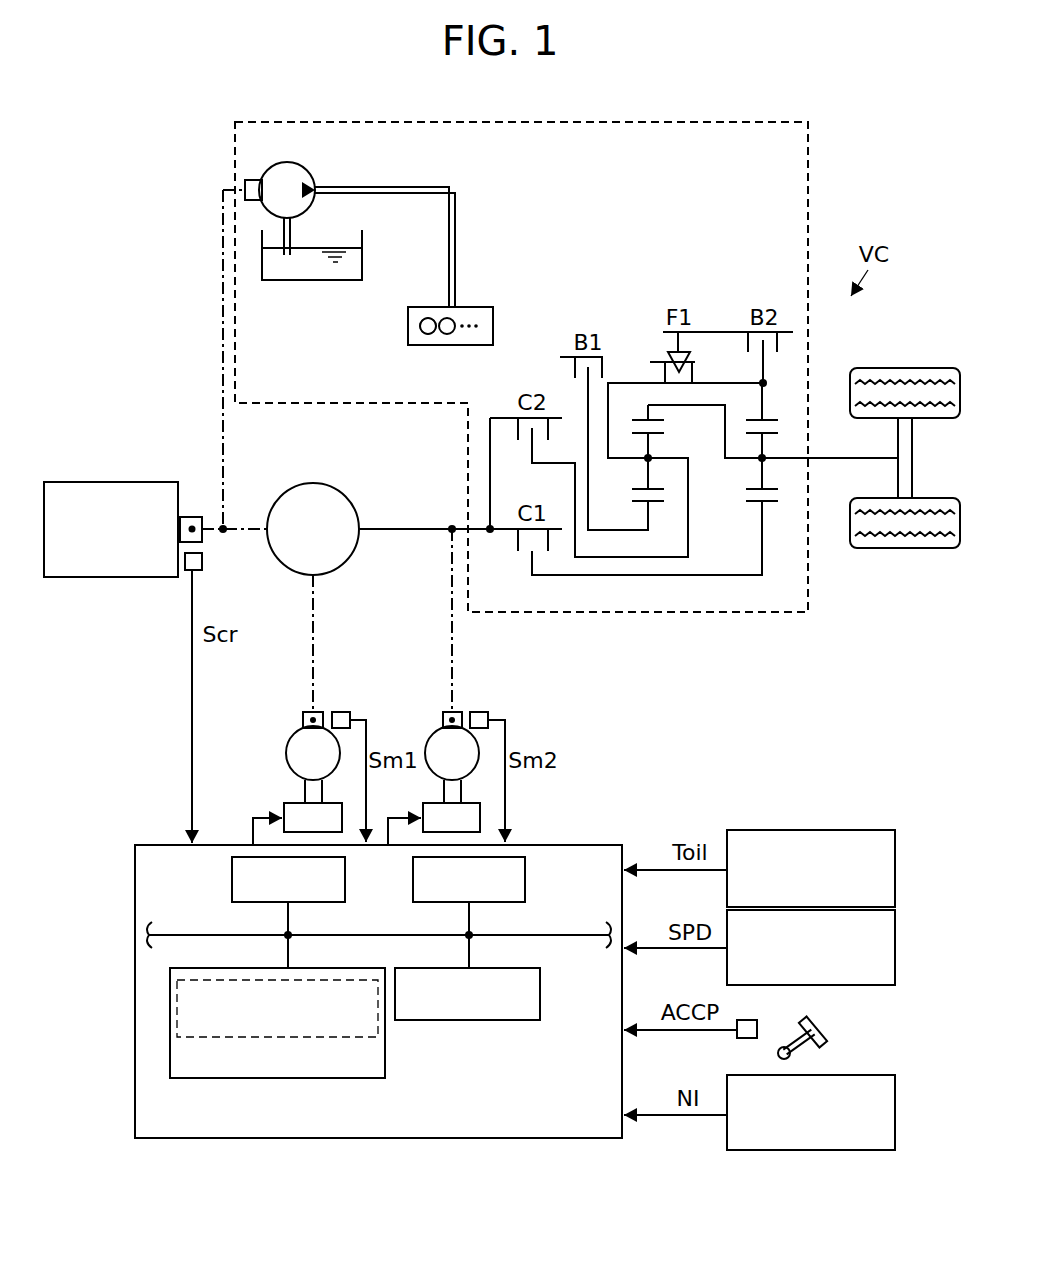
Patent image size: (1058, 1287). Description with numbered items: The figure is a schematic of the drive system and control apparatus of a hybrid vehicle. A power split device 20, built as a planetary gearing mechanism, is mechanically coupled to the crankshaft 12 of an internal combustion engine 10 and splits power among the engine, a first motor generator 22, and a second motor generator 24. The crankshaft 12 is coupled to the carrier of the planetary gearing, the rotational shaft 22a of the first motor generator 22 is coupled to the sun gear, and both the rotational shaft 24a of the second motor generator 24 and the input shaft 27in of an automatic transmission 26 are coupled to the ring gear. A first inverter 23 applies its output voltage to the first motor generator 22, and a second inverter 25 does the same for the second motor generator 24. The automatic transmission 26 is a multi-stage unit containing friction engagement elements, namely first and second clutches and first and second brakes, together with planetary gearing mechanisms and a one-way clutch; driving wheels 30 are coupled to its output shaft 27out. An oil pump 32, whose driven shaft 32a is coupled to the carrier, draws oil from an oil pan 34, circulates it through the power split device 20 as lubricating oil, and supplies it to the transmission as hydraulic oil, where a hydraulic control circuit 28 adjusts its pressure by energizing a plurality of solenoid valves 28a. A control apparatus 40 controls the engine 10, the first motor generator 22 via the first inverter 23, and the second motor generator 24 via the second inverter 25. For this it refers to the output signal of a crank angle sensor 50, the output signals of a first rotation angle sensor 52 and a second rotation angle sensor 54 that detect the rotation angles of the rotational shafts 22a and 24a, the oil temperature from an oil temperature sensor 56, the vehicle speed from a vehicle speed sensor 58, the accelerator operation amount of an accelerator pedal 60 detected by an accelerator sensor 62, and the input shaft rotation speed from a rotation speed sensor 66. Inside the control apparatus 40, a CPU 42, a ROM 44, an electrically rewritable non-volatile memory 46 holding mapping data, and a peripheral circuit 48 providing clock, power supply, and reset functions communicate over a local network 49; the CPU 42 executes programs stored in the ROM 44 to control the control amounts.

The internal combustion engine 10 is at (112, 482).
The crankshaft 12 is at (190, 517).
The power split device 20 is at (356, 501).
The first motor generator 22 is at (286, 754).
The rotational shaft of the first motor generator 22a is at (300, 720).
The first inverter 23 is at (342, 818).
The second motor generator 24 is at (428, 743).
The rotational shaft of the second motor generator 24a is at (444, 714).
The second inverter 25 is at (480, 818).
The automatic transmission 26 is at (810, 175).
The input shaft 27in is at (492, 535).
The output shaft 27out is at (783, 458).
The hydraulic control circuit 28 is at (473, 307).
The solenoid valves 28a is at (428, 334).
The driving wheels 30 is at (903, 368).
The oil pump 32 is at (297, 170).
The driven shaft of the oil pump 32a is at (250, 180).
The oil pan 34 is at (364, 268).
The control apparatus 40 is at (588, 845).
The central processing unit (CPU) 42 is at (346, 881).
The read-only memory (ROM) 44 is at (526, 881).
The memory 46 is at (335, 968).
The peripheral circuit 48 is at (490, 968).
The local network 49 is at (512, 935).
The crank angle sensor 50 is at (190, 572).
The first rotation angle sensor 52 is at (340, 712).
The second rotation angle sensor 54 is at (478, 712).
The oil temperature sensor 56 is at (897, 870).
The vehicle speed sensor 58 is at (897, 948).
The accelerator pedal 60 is at (823, 1022).
The accelerator sensor 62 is at (748, 1020).
The rotation speed sensor 66 is at (897, 1115).